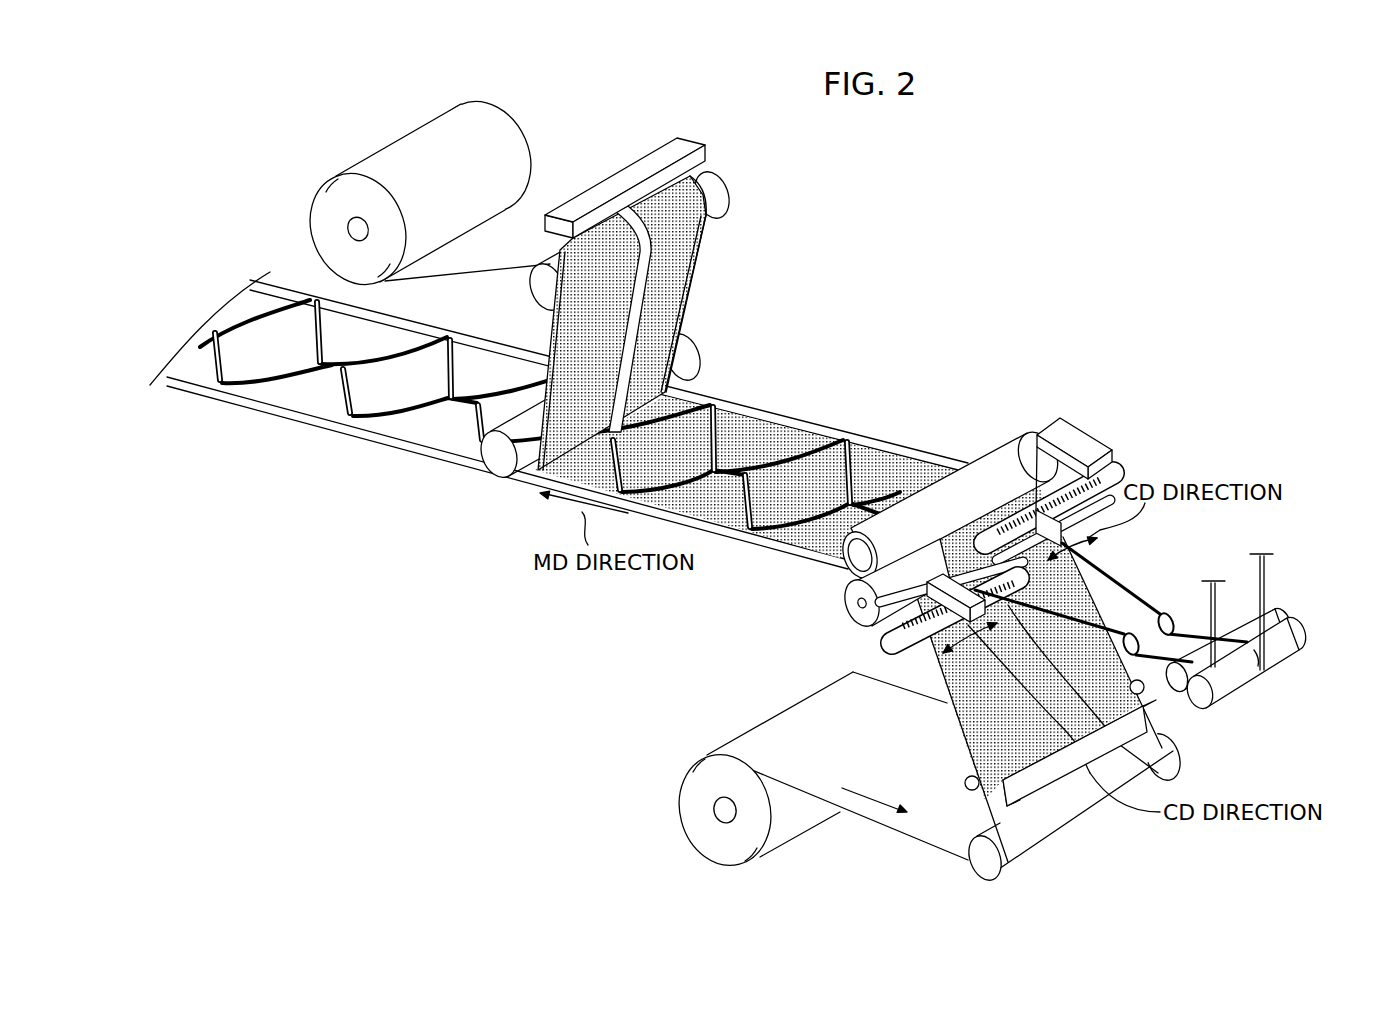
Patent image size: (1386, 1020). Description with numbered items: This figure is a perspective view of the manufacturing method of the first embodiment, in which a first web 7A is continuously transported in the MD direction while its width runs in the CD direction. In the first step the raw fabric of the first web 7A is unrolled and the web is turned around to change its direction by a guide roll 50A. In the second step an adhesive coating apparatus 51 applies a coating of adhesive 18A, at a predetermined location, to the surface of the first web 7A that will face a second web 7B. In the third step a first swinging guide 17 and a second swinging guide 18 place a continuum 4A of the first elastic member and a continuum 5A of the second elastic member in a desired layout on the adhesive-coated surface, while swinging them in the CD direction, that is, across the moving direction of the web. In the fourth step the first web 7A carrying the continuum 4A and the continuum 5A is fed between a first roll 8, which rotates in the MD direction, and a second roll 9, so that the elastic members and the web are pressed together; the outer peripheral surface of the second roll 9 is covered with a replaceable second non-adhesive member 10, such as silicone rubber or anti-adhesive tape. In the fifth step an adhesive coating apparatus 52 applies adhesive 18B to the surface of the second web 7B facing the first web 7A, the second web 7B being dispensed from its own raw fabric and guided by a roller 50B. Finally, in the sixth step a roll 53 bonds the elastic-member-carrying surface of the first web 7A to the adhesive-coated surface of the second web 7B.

The adhesive coating apparatus 52 is at (700, 142).
The second guide roller 50B is at (554, 268).
The second web 7B is at (492, 253).
The adhesive 18B is at (677, 290).
The roll 53 is at (497, 467).
The second roll 9 is at (1023, 450).
The first swinging guide 17 is at (1052, 520).
The second non-adhesive member 10 is at (843, 572).
The first roll 8 is at (857, 612).
The second swinging guide 18 is at (913, 653).
The first web 7A is at (935, 833).
The guide roll 50A is at (987, 870).
The adhesive coating apparatus 51 is at (1077, 772).
The adhesive 18A is at (1065, 597).
The continuum of the second elastic member 5A is at (1220, 593).
The continuum of the first elastic member 4A is at (1270, 582).